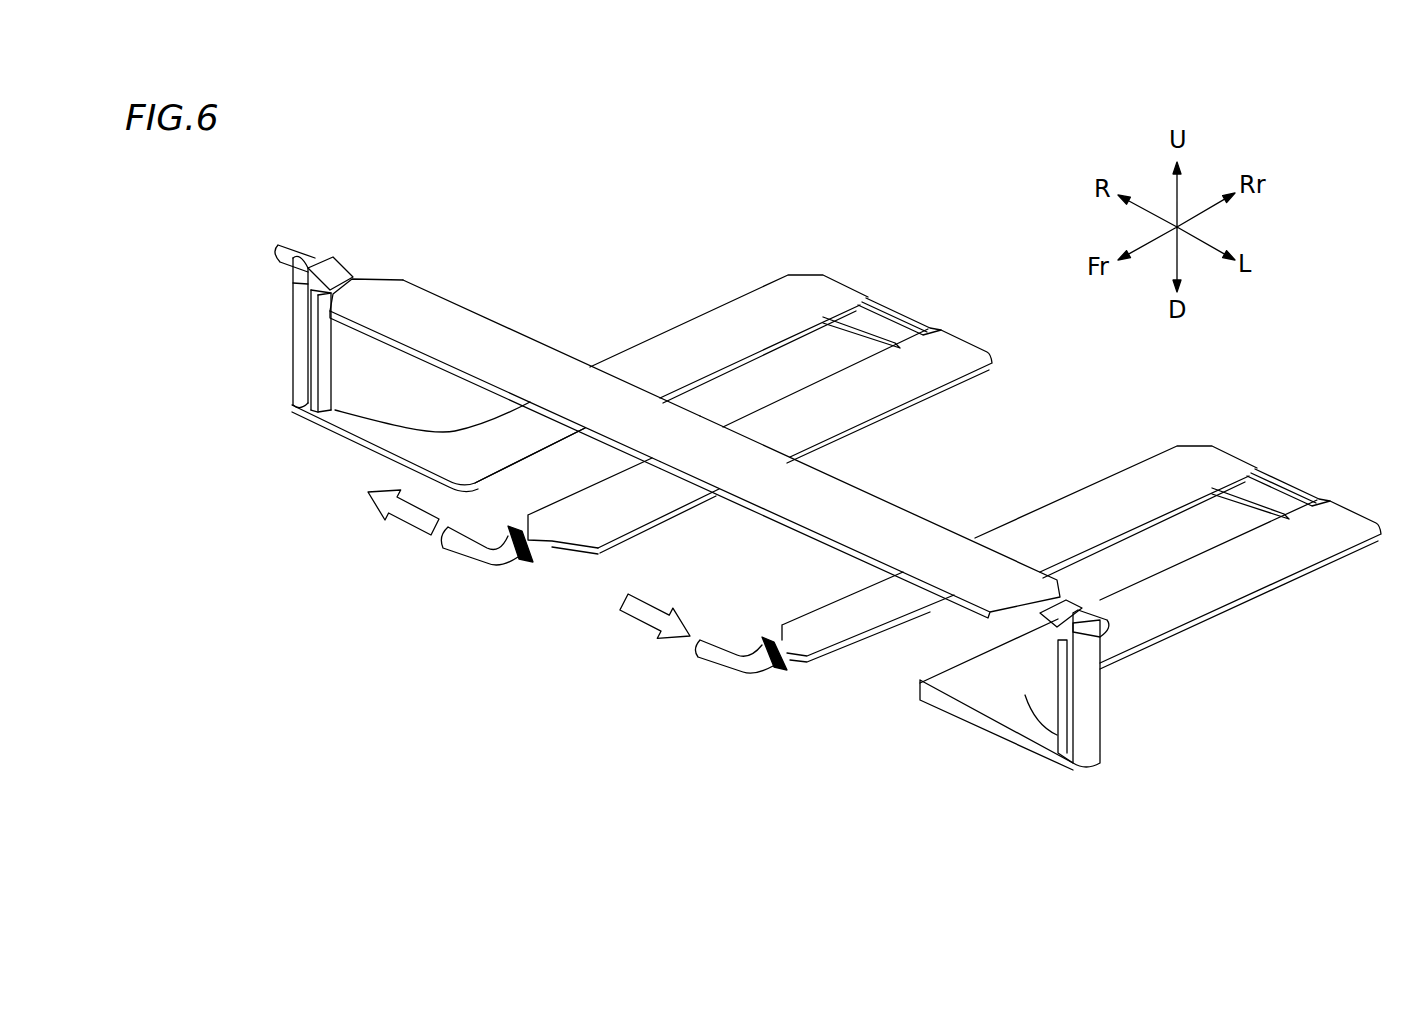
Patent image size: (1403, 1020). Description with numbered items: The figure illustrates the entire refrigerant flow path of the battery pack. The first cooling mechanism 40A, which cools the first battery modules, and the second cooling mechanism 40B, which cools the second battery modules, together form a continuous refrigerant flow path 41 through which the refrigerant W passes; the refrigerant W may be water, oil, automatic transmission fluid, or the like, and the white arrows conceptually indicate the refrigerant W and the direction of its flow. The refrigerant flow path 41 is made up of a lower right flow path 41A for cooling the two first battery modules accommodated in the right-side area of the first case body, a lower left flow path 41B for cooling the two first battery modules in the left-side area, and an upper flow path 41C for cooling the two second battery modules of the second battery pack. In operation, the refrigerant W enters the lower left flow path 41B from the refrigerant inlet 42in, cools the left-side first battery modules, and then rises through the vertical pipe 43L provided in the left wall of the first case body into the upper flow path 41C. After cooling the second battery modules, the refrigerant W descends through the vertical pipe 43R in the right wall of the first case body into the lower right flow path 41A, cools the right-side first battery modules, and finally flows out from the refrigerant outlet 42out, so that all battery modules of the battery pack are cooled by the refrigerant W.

The refrigerant flow path 41 is at (684, 377).
The first cooling mechanism 40A is at (832, 402).
The second cooling mechanism 40B is at (504, 327).
The lower right flow path 41A is at (806, 246).
The lower left flow path 41B is at (1194, 418).
The upper flow path 41C is at (399, 260).
The refrigerant inlet 42in is at (756, 682).
The refrigerant outlet 42out is at (502, 571).
The vertical pipe 43R is at (295, 337).
The vertical pipe 43L is at (1103, 697).
The refrigerant W is at (402, 518).